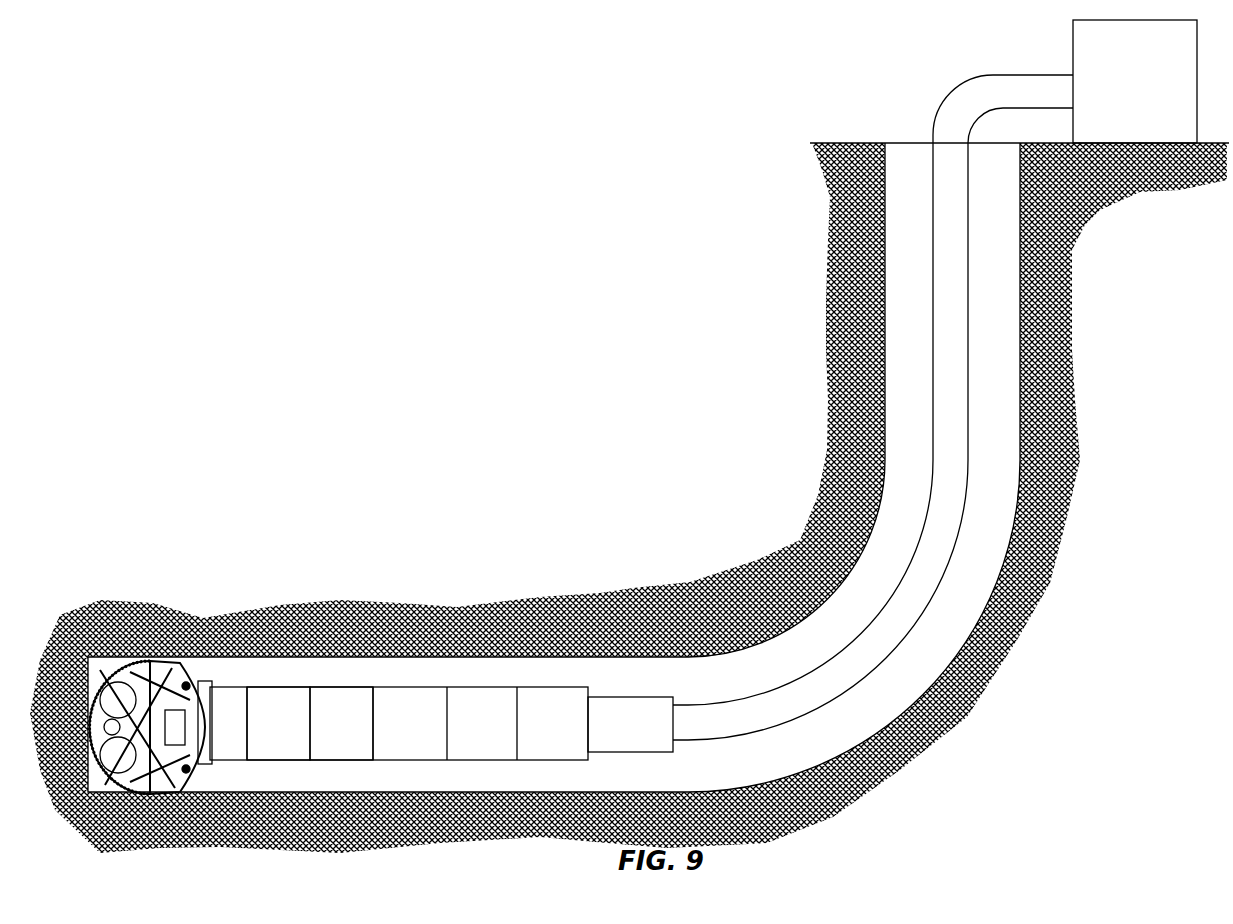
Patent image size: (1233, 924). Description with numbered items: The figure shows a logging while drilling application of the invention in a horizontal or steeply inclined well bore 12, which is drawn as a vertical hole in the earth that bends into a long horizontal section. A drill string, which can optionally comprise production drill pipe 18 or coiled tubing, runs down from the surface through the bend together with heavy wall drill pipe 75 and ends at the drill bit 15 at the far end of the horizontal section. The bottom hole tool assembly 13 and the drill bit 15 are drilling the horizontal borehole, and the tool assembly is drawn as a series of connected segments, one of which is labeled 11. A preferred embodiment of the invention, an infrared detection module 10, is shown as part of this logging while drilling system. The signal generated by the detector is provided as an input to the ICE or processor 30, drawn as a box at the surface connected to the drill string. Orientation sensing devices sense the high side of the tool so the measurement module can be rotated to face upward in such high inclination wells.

The infrared detection module 10 is at (547, 703).
The tool section 11 is at (357, 702).
The well bore 12 is at (866, 332).
The bottom hole tool assembly 13 is at (287, 703).
The drill bit 15 is at (151, 706).
The production drill pipe 18 is at (950, 487).
The processor 30 is at (1083, 44).
The heavy wall drill pipe 75 is at (622, 707).